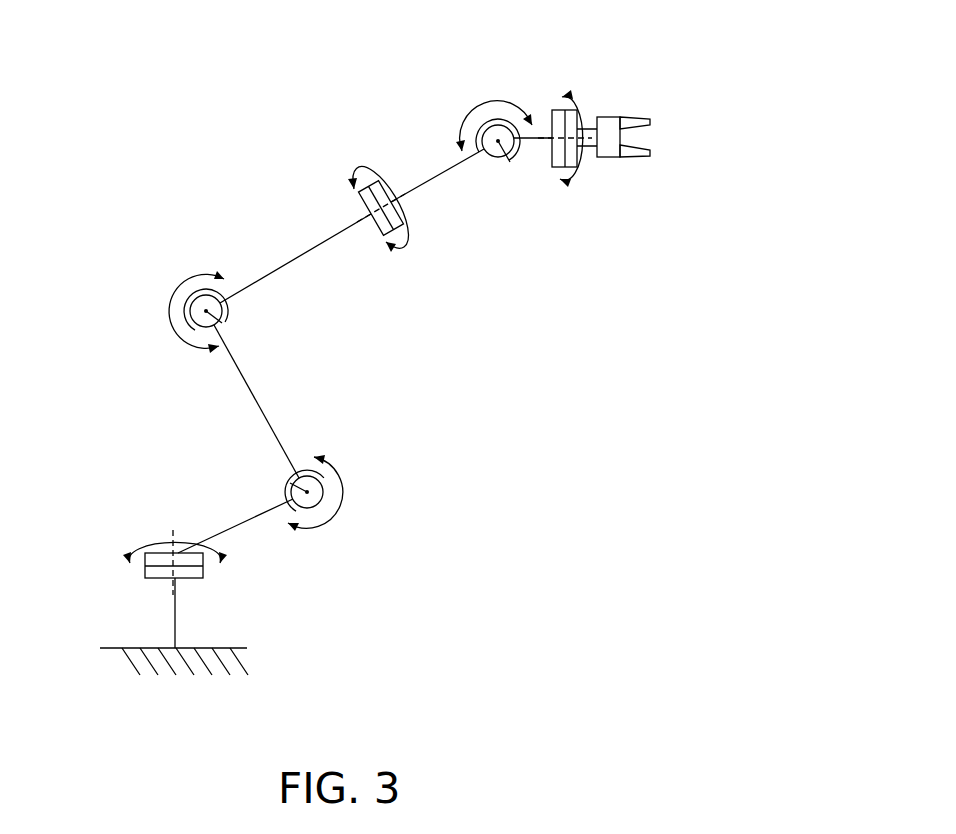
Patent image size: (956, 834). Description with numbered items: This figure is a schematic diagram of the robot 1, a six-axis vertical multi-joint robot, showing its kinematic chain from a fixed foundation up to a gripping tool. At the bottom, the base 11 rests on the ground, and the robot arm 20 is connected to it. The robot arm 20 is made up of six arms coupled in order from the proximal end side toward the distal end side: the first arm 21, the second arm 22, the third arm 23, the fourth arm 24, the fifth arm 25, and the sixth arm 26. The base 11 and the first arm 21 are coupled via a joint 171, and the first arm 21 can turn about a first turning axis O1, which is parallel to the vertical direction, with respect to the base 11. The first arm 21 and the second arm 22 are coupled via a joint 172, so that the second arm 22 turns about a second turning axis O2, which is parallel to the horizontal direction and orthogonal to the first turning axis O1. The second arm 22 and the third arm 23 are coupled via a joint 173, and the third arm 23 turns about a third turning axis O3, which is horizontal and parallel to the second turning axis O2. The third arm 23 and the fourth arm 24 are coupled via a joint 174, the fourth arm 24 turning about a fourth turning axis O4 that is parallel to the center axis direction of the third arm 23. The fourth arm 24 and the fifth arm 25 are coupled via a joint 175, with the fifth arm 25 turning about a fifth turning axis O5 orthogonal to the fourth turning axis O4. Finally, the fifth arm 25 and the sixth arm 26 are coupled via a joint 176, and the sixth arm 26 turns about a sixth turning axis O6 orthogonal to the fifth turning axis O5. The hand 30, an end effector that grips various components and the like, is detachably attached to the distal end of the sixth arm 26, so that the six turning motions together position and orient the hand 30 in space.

The robot 1 is at (233, 123).
The base 11 is at (120, 592).
The robot arm 20 is at (232, 182).
The first arm 21 is at (197, 502).
The second arm 22 is at (285, 390).
The third arm 23 is at (280, 240).
The fourth arm 24 is at (433, 142).
The fifth arm 25 is at (533, 152).
The sixth arm 26 is at (582, 183).
The hand 30 is at (608, 152).
The joint 171 is at (123, 553).
The joint 172 is at (270, 465).
The joint 173 is at (237, 315).
The joint 174 is at (352, 165).
The joint 175 is at (487, 167).
The joint 176 is at (548, 90).
The first turning axis O1 is at (168, 535).
The second turning axis O2 is at (286, 482).
The third turning axis O3 is at (224, 325).
The fourth turning axis O4 is at (370, 210).
The fifth turning axis O5 is at (511, 166).
The sixth turning axis O6 is at (533, 127).